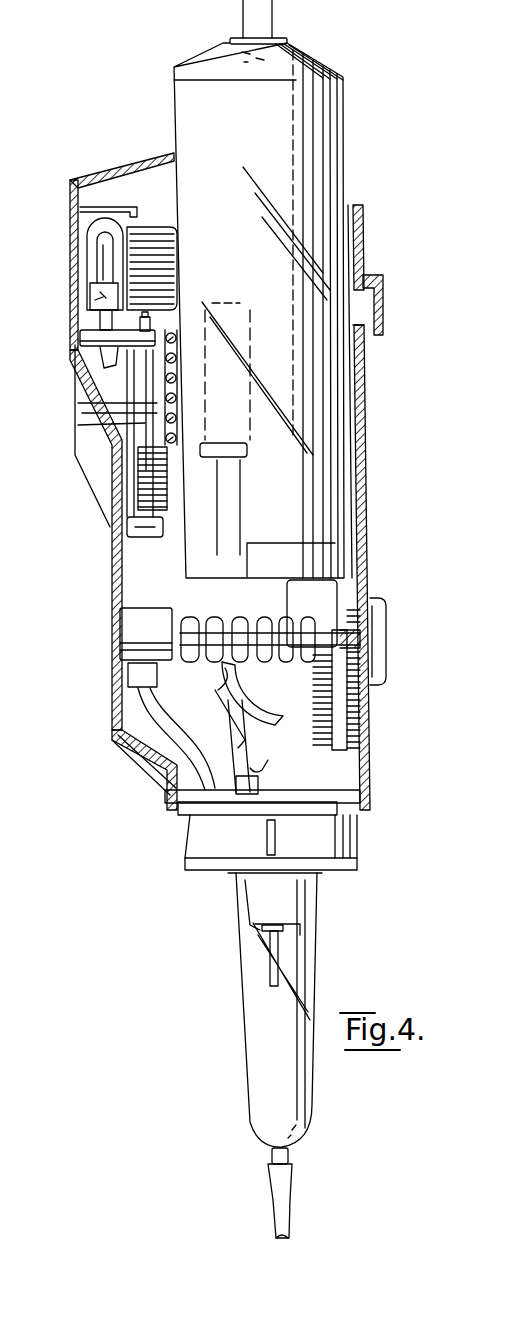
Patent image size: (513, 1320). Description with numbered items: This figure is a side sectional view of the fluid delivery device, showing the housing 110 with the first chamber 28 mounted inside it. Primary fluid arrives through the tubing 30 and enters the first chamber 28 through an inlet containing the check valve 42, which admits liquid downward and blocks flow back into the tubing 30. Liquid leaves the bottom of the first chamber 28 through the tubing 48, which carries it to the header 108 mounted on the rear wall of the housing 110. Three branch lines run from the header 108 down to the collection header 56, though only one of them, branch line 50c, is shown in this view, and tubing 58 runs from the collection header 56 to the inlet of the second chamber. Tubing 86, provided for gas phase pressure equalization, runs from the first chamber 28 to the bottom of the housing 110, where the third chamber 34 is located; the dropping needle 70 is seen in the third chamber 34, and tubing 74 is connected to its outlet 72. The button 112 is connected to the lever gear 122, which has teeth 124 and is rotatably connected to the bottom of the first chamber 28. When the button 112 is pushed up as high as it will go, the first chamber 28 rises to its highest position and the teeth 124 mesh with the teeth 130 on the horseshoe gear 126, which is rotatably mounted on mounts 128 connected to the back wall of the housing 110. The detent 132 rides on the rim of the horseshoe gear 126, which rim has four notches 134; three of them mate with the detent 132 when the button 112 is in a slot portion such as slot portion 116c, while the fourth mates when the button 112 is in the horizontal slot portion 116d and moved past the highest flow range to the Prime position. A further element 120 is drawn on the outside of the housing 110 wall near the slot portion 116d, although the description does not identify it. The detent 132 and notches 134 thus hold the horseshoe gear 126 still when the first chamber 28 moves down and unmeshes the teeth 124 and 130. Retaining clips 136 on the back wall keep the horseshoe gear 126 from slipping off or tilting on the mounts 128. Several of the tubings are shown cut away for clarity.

The first chamber 28 is at (346, 140).
The tubing 30 is at (243, 12).
The third chamber 34 is at (312, 993).
The check valve 42 is at (234, 47).
The tubing 48 is at (100, 292).
The branch line 50c is at (100, 326).
The collection header 56 is at (120, 612).
The tubing 58 is at (160, 730).
The dropping needle 70 is at (273, 970).
The outlet 72 is at (272, 1153).
The tubing 74 is at (275, 1186).
The tubing 86 is at (227, 665).
The header 108 is at (78, 228).
The housing 110 is at (76, 313).
The button 112 is at (387, 637).
The slot portion 116c is at (340, 752).
The horizontal slot portion 116d is at (364, 335).
The clip 120 is at (384, 302).
The lever gear 122 is at (326, 620).
The teeth 124 is at (305, 664).
The horseshoe gear 126 is at (127, 518).
The mounts 128 is at (115, 425).
The teeth 130 is at (177, 440).
The detent 132 is at (76, 358).
The notches 134 is at (120, 402).
The retaining clips 136 is at (130, 535).